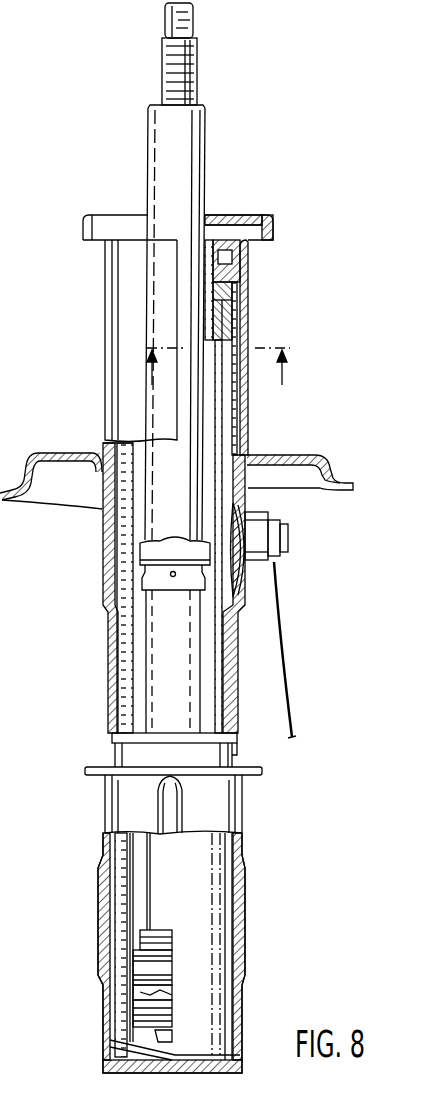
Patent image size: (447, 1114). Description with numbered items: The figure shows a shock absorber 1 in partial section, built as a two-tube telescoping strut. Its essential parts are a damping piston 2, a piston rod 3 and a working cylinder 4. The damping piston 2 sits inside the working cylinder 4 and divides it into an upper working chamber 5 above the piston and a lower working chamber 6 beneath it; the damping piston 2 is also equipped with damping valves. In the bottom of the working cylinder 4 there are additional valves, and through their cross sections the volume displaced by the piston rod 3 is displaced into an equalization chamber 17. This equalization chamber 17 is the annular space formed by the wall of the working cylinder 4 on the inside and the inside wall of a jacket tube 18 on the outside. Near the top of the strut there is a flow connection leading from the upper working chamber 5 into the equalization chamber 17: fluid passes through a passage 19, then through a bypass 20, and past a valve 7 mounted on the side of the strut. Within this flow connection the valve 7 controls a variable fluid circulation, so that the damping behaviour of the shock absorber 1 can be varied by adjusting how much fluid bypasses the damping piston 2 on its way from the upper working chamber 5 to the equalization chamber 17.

The shock absorber 1 is at (314, 714).
The damping piston 2 is at (160, 965).
The piston rod 3 is at (183, 142).
The working cylinder 4 is at (222, 662).
The upper working chamber 5 is at (138, 880).
The lower working chamber 6 is at (140, 995).
The valve 7 is at (260, 530).
The equalization chamber 17 is at (122, 845).
The jacket tube 18 is at (110, 673).
The passage 19 is at (237, 280).
The bypass 20 is at (243, 432).